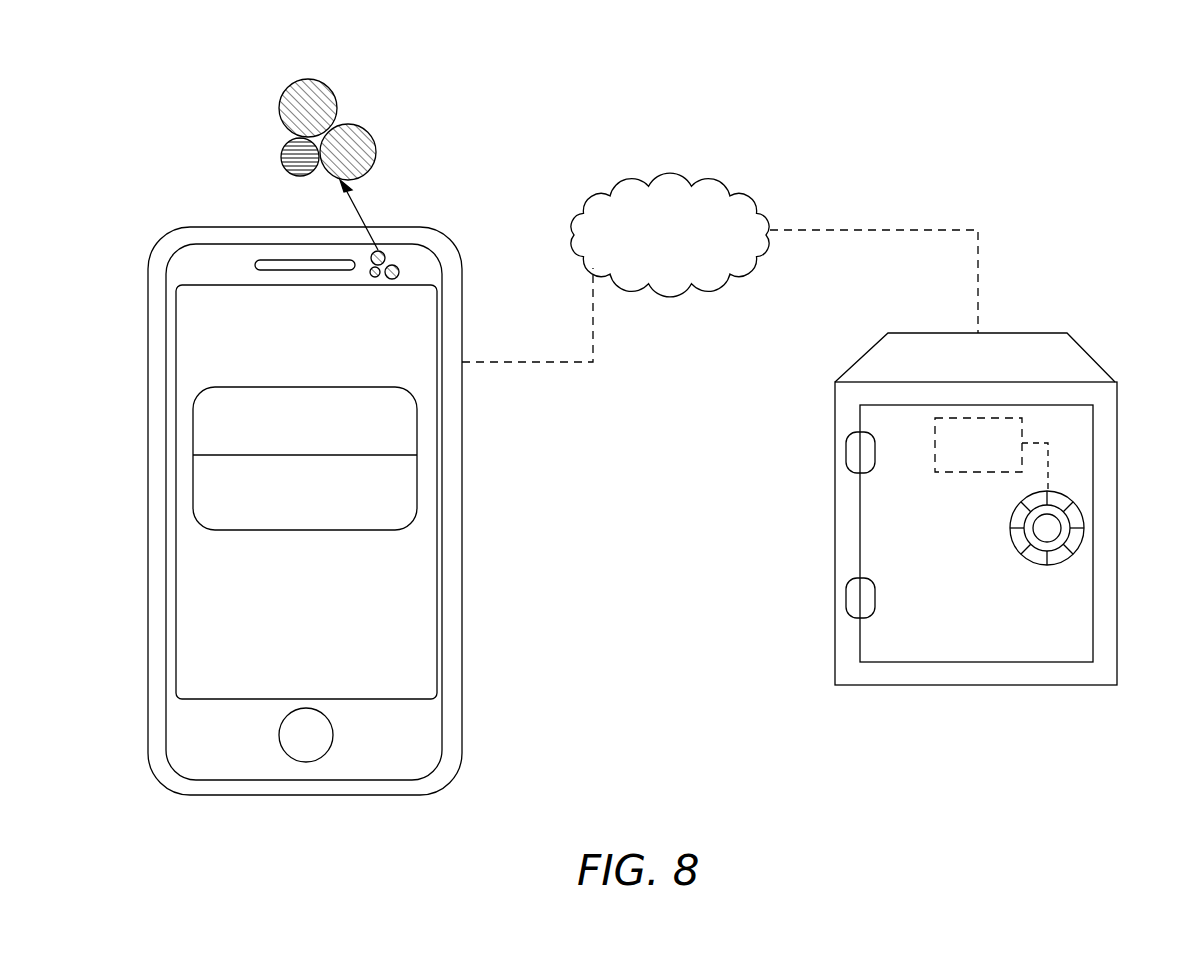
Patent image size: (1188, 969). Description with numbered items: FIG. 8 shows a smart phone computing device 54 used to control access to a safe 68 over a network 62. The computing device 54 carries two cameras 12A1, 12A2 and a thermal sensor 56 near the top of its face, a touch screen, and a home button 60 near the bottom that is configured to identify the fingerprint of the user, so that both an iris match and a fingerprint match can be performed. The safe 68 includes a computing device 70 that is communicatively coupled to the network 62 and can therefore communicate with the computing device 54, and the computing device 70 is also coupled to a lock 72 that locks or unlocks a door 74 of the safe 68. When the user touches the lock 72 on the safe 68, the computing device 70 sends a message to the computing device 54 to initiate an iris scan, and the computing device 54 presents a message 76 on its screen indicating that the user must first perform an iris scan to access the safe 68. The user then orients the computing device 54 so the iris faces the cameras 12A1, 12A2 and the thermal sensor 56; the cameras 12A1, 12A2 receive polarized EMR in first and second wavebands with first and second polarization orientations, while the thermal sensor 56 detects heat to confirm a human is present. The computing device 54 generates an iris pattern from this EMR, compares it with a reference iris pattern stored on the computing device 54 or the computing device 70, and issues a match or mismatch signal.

The camera 12A1 is at (332, 92).
The camera 12A2 is at (376, 140).
The thermal sensor 56 is at (281, 157).
The computing device 54 is at (462, 485).
The home button 60 is at (333, 735).
The message 76 is at (417, 425).
The network 62 is at (660, 259).
The safe 68 is at (1078, 340).
The computing device 70 is at (966, 456).
The lock 72 is at (1052, 521).
The door 74 is at (930, 648).